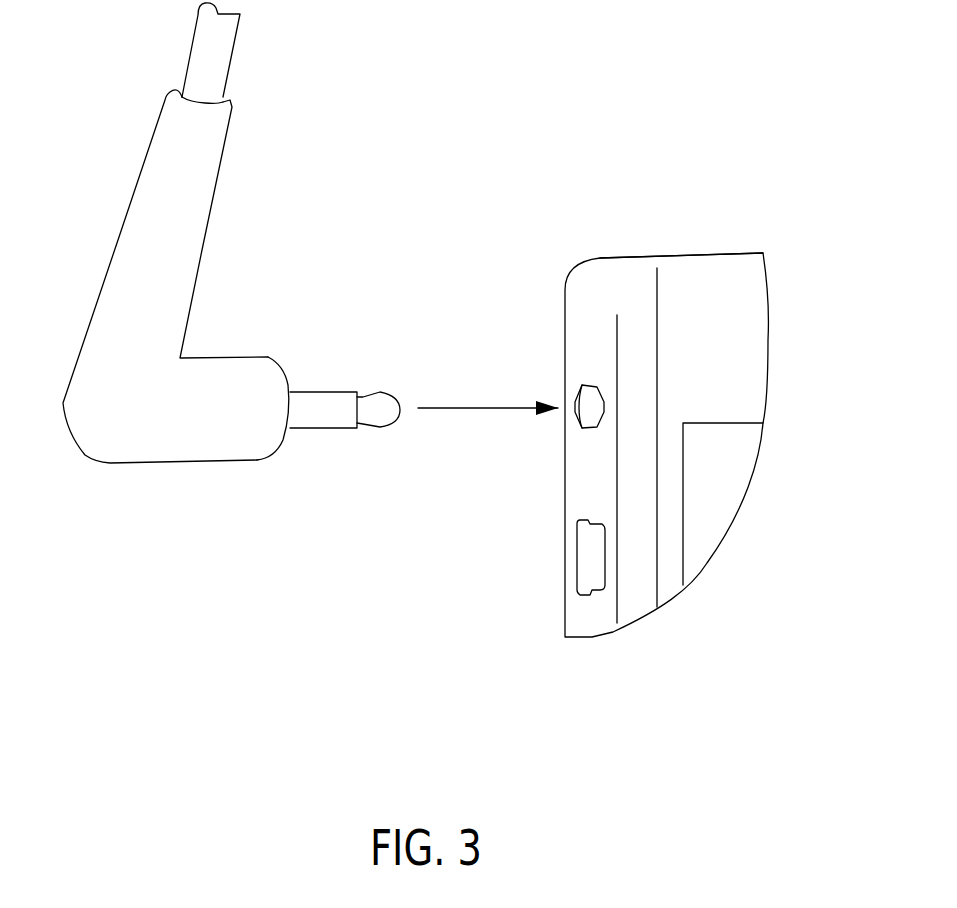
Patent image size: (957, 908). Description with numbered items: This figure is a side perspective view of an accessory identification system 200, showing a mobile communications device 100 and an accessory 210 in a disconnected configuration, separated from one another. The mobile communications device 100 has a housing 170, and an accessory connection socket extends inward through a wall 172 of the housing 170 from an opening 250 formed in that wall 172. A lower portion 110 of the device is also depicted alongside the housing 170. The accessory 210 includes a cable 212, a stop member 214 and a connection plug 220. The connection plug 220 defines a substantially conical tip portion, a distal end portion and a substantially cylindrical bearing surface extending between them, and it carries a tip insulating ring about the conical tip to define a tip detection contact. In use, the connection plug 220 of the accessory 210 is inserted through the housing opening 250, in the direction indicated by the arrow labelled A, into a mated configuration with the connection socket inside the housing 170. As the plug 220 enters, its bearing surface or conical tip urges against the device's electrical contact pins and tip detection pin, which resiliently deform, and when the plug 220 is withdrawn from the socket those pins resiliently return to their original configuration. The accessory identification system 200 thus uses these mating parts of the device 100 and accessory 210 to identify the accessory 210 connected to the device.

The mobile communications device 100 is at (698, 613).
The lower housing portion 110 is at (720, 475).
The housing 170 is at (740, 347).
The wall 172 is at (643, 252).
The opening 250 is at (590, 377).
The accessory identification system 200 is at (427, 590).
The accessory 210 is at (110, 490).
The cable 212 is at (218, 45).
The stop member 214 is at (280, 443).
The connection plug 220 is at (330, 402).